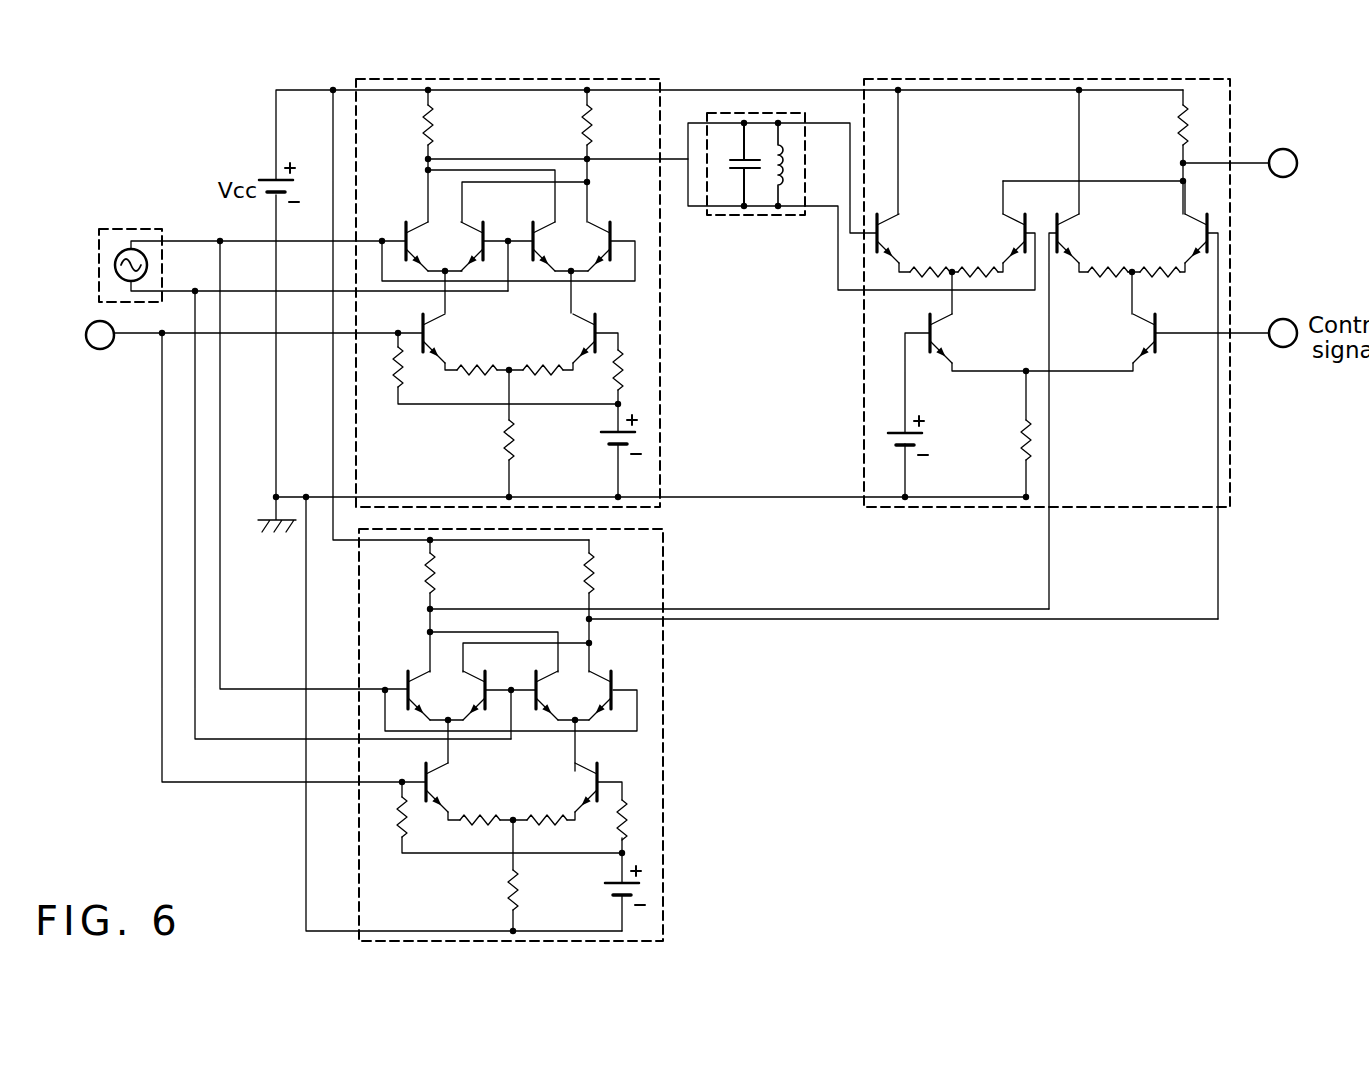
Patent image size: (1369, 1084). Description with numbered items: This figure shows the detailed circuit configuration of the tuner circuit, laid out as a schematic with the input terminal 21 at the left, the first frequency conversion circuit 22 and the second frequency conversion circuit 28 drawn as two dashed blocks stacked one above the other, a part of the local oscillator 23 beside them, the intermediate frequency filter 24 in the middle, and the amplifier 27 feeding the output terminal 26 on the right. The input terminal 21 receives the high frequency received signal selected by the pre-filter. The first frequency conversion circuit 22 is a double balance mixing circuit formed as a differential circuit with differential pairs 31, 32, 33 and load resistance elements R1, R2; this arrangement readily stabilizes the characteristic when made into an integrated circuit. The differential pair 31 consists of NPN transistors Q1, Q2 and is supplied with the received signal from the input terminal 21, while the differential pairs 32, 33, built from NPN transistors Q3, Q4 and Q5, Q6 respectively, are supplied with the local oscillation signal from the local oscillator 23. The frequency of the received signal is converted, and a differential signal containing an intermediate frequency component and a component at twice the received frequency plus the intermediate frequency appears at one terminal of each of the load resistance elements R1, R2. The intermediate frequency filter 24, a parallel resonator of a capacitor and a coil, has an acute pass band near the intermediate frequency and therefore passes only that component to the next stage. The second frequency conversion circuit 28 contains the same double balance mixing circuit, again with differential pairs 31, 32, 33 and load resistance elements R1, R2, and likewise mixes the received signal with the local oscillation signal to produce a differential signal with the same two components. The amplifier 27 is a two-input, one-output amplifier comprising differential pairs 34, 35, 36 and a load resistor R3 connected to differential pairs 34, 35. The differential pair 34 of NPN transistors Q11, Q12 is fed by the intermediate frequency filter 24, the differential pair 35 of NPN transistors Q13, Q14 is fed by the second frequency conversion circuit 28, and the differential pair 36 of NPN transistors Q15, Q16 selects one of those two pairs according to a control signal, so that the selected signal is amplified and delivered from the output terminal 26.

The input terminal 21 is at (100, 350).
The first frequency conversion circuit 22 is at (664, 306).
The local oscillator 23 is at (146, 228).
The intermediate frequency filter 24 is at (757, 219).
The output terminal 26 is at (1281, 148).
The amplifier 27 is at (862, 318).
The second frequency conversion circuit 28 is at (665, 757).
The differential pair 31 is at (519, 611).
The differential pair 32 is at (508, 471).
The differential pair 33 is at (555, 475).
The differential pair 34 is at (951, 202).
The differential pair 35 is at (1133, 354).
The differential pair 36 is at (1078, 407).
The NPN transistor Q1 is at (440, 331).
The NPN transistor Q2 is at (583, 335).
The NPN transistor Q3 is at (405, 222).
The NPN transistor Q4 is at (484, 222).
The NPN transistor Q5 is at (533, 222).
The NPN transistor Q6 is at (610, 222).
The NPN transistor Q11 is at (900, 232).
The NPN transistor Q12 is at (1012, 241).
The NPN transistor Q13 is at (1080, 232).
The NPN transistor Q14 is at (1186, 241).
The NPN transistor Q15 is at (957, 333).
The NPN transistor Q16 is at (1133, 333).
The load resistance element R1 is at (444, 121).
The load resistance element R2 is at (575, 126).
The load resistor R3 is at (1175, 128).